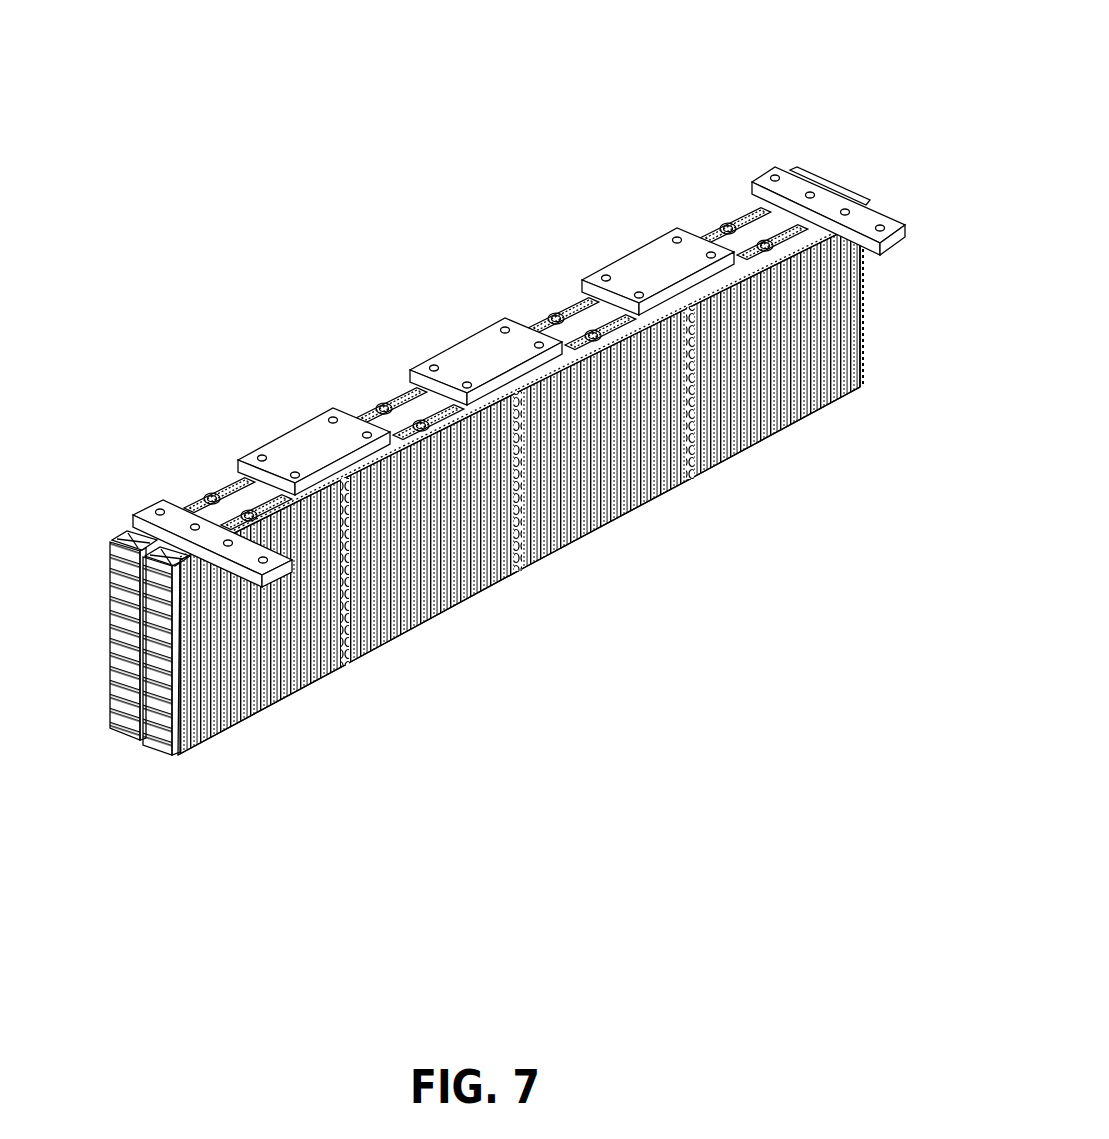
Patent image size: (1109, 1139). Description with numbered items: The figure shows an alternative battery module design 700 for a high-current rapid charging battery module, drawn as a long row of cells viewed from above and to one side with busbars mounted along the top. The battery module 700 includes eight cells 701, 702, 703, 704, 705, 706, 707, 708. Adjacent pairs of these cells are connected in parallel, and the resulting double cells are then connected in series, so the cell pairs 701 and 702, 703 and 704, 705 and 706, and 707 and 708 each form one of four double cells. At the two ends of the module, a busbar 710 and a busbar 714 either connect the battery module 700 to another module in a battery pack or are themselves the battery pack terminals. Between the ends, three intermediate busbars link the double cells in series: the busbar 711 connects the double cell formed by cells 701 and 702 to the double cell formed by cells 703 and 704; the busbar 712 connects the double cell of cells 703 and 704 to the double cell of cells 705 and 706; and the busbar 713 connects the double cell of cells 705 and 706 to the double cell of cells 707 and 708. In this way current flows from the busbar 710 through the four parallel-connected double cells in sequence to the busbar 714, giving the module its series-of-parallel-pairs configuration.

The battery module design 700 is at (200, 86).
The cell 701 is at (265, 708).
The cell 702 is at (235, 488).
The cell 703 is at (458, 615).
The cell 704 is at (406, 398).
The cell 705 is at (632, 510).
The cell 706 is at (576, 297).
The cell 707 is at (813, 408).
The cell 708 is at (747, 212).
The busbar 710 is at (183, 518).
The busbar 711 is at (310, 445).
The busbar 712 is at (490, 345).
The busbar 713 is at (672, 252).
The busbar 714 is at (793, 187).